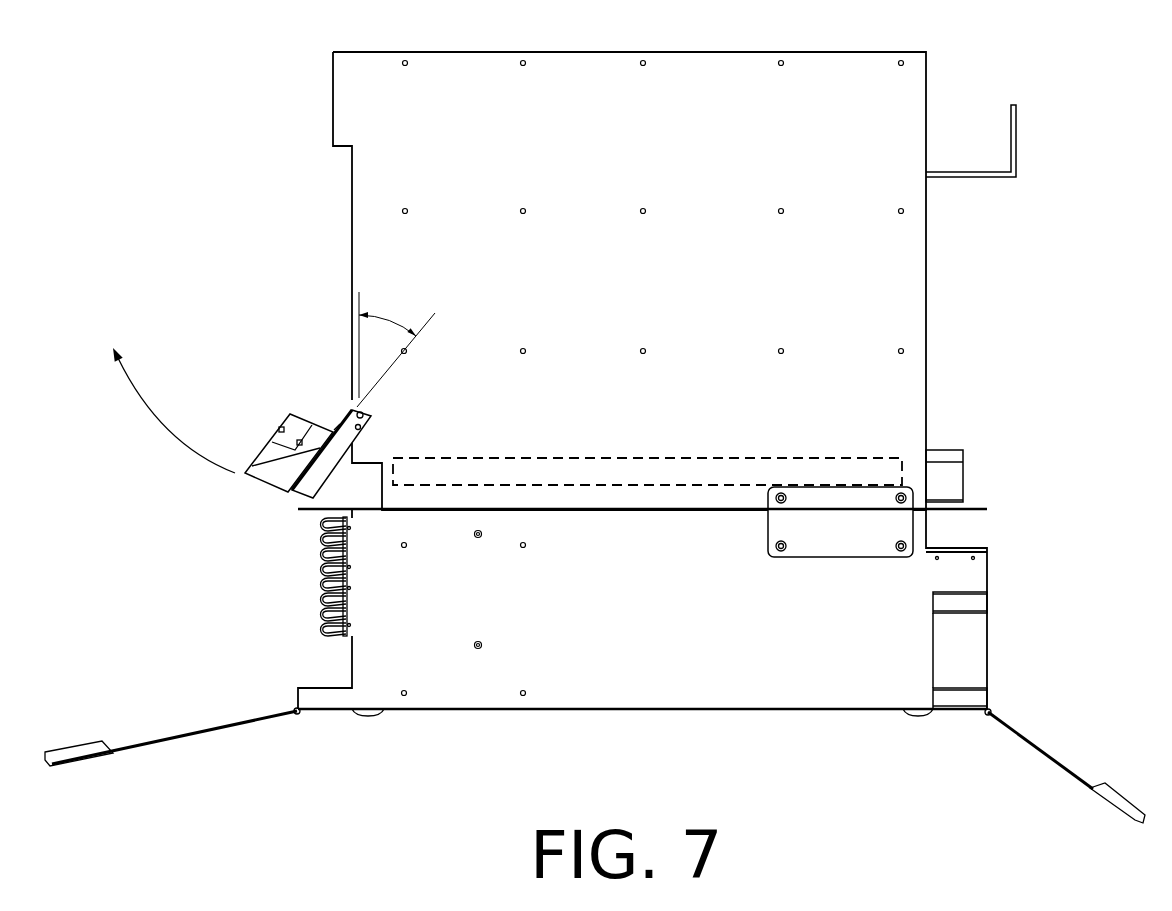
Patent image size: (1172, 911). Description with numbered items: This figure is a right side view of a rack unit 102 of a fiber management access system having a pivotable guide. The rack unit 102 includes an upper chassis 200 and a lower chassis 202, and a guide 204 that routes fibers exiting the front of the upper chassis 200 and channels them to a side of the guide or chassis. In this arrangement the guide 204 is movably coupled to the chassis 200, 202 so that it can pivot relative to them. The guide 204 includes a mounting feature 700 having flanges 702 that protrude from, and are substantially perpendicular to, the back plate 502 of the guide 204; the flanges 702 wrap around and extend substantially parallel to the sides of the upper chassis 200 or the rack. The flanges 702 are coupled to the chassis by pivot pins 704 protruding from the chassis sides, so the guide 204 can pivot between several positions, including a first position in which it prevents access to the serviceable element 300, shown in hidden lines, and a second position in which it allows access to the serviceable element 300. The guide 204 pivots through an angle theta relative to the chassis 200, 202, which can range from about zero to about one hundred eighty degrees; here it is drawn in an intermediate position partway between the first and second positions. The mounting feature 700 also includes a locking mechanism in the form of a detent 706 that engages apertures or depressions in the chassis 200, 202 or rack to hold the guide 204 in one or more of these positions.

The rack unit 102 is at (270, 83).
The upper chassis 200 is at (607, 158).
The lower chassis 202 is at (607, 622).
The guide 204 is at (267, 430).
The serviceable element 300 is at (628, 453).
The back plate 502 is at (337, 427).
The mounting feature 700 is at (398, 404).
The flanges 702 is at (308, 488).
The pivot pins 704 is at (355, 408).
The detent 706 is at (363, 427).